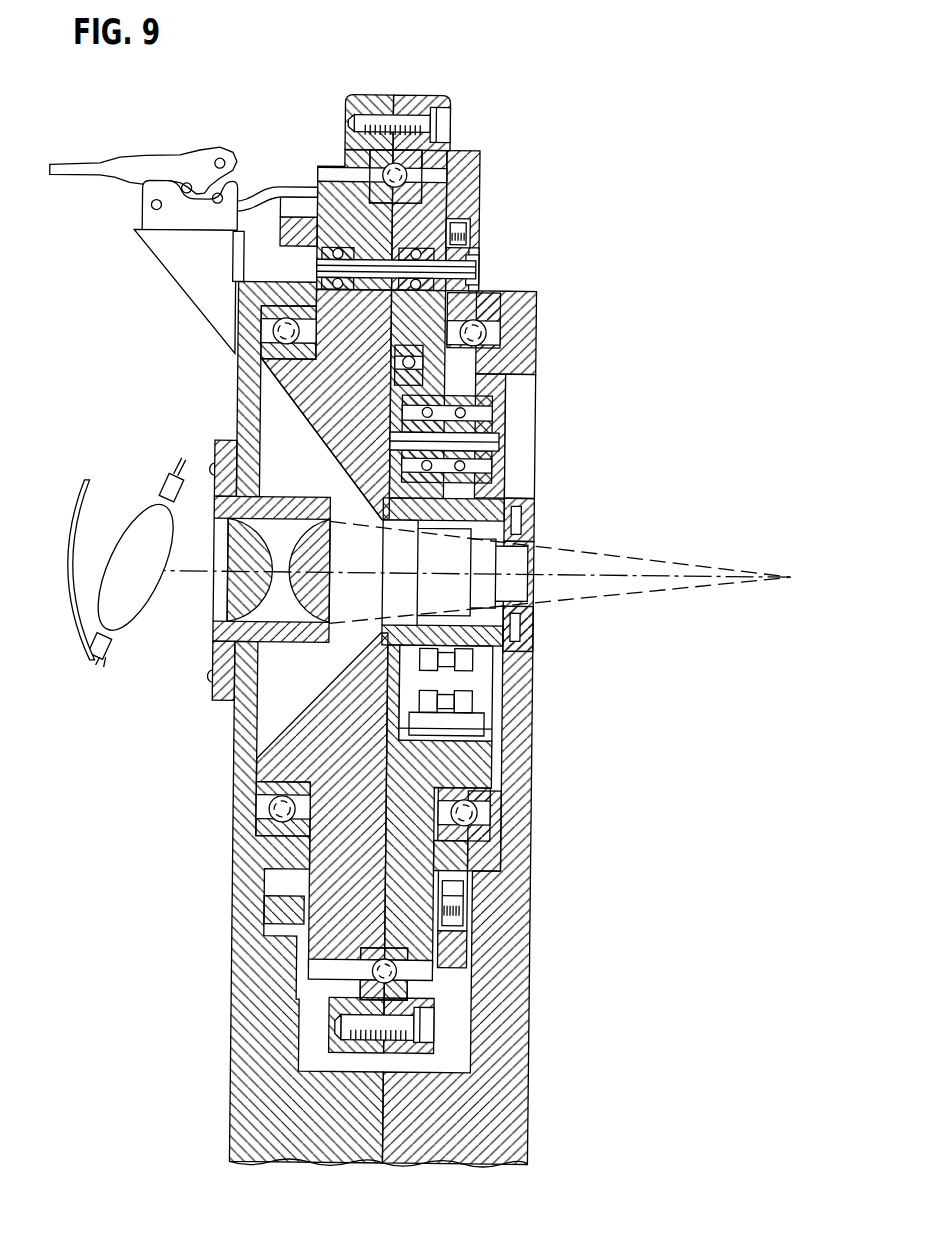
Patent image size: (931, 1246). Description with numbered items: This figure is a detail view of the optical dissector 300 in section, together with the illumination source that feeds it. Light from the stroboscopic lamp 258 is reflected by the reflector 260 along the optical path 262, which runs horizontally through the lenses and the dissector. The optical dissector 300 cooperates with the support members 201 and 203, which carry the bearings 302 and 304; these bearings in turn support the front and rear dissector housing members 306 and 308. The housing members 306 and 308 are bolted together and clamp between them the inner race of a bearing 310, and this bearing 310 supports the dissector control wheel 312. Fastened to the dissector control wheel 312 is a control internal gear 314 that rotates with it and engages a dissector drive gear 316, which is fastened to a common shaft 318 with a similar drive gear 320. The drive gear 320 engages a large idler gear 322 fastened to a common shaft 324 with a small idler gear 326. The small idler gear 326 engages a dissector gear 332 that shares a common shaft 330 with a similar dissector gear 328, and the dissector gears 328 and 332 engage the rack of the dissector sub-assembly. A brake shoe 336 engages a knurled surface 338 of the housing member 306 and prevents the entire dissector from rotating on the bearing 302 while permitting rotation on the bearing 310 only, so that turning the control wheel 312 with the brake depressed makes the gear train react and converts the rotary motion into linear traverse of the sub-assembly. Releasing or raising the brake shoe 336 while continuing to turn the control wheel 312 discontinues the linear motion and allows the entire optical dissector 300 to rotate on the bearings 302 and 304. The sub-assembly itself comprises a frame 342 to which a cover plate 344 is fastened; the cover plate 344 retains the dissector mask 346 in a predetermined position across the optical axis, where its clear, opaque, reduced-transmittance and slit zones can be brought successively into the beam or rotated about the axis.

The support member 201 is at (235, 1072).
The support member 203 is at (533, 1078).
The stroboscopic lamp 258 is at (146, 525).
The reflector 260 is at (74, 490).
The optical path 262 is at (674, 571).
The optical dissector 300 is at (540, 253).
The bearing 302 is at (270, 345).
The bearing 304 is at (500, 318).
The front dissector housing member 306 is at (262, 766).
The rear dissector housing member 308 is at (500, 786).
The bearing 310 is at (478, 164).
The dissector control wheel 312 is at (412, 94).
The control internal gear 314 is at (468, 230).
The dissector drive gear 316 is at (478, 262).
The common shaft 318 is at (480, 271).
The drive gear 320 is at (345, 250).
The large idler gear 322 is at (316, 438).
The common shaft 324 is at (292, 403).
The small idler gear 326 is at (406, 358).
The dissector gear 328 is at (495, 416).
The common shaft 330 is at (495, 445).
The dissector gear 332 is at (393, 474).
The brake shoe 336 is at (283, 187).
The knurled surface 338 is at (278, 220).
The frame 342 is at (530, 541).
The cover plate 344 is at (533, 503).
The dissector mask 346 is at (530, 615).